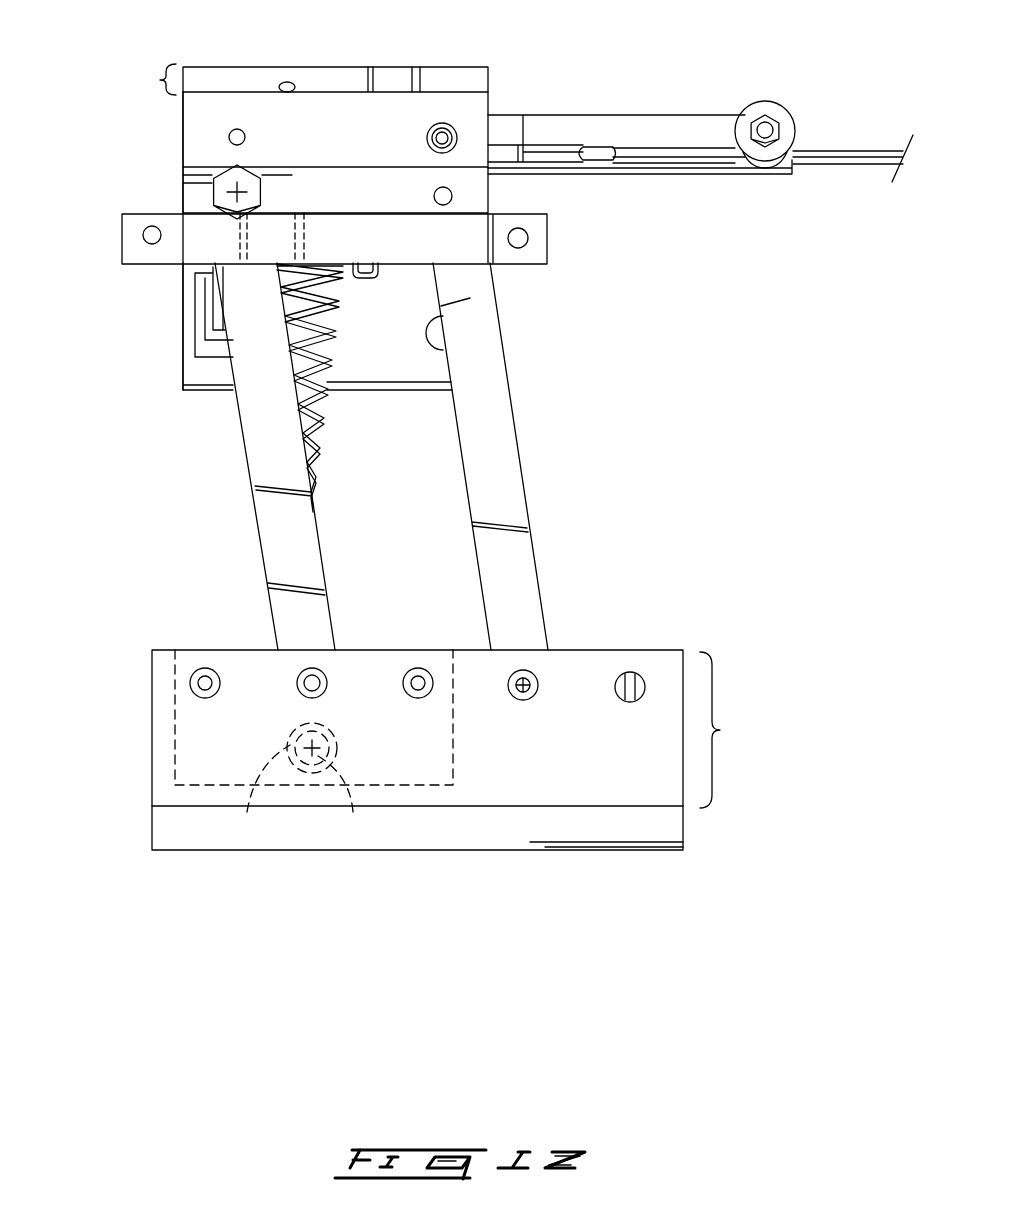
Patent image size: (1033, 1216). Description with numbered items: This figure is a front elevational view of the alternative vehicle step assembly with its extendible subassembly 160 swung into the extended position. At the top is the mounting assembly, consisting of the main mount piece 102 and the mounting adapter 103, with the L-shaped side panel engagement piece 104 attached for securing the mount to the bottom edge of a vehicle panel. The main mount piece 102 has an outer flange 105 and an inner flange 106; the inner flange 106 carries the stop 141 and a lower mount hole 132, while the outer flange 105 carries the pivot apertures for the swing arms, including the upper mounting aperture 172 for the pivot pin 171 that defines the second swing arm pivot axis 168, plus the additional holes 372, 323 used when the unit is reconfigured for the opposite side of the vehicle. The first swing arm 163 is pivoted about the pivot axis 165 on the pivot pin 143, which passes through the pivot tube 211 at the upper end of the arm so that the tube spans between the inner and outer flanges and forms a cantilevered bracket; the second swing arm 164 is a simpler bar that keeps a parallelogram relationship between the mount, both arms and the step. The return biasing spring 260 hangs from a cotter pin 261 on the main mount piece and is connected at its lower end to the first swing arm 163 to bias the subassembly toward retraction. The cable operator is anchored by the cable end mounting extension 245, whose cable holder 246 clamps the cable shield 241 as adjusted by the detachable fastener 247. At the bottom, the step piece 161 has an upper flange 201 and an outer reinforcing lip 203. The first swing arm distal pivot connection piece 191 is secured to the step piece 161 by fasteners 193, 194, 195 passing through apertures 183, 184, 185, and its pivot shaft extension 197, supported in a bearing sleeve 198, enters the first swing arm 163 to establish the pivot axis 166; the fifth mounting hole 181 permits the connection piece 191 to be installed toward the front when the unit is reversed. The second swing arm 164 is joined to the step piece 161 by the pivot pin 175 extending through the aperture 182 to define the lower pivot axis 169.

The main mount piece 102 is at (308, 92).
The mounting adapter 103 is at (298, 80).
The cotter pin 261 is at (283, 82).
The hole 372 is at (229, 135).
The outer flange 105 is at (205, 141).
The second swing arm pivot axis 168 is at (445, 128).
The pivot pin 171 is at (428, 138).
The upper mounting aperture 172 is at (430, 90).
The first link upper end pivot axis 165 is at (228, 182).
The pivot pin 143 is at (262, 190).
The hole 323 is at (452, 196).
The side panel engagement piece 104 is at (122, 241).
The cable end mounting extension 245 is at (705, 132).
The cable shield 241 is at (812, 158).
The cable holder 246 is at (790, 128).
The detachable fastener 247 is at (772, 122).
The pivot tube 211 is at (220, 310).
The inner flange 106 is at (410, 288).
The lower mount hole 132 is at (425, 328).
The stop 141 is at (377, 282).
The return biasing spring 260 is at (323, 427).
The first swing arm 163 is at (295, 545).
The second swing arm 164 is at (512, 568).
The step piece 161 is at (132, 827).
The extendible subassembly 160 is at (337, 933).
The upper flange 201 is at (742, 730).
The outer reinforcing lip 203 is at (475, 828).
The fastener 195 is at (154, 643).
The aperture 185 is at (203, 668).
The aperture 184 is at (313, 642).
The fastener 194 is at (300, 685).
The aperture 183 is at (418, 670).
The fastener 193 is at (410, 694).
The aperture 182 is at (545, 680).
The pivot pin 175 is at (512, 690).
The pivot axis 169 is at (535, 693).
The mounting hole 181 is at (645, 684).
The pivot axis 166 is at (310, 747).
The first swing arm distal pivot connection piece 191 is at (175, 780).
The bearing sleeve 198 is at (258, 795).
The pivot shaft extension 197 is at (351, 801).